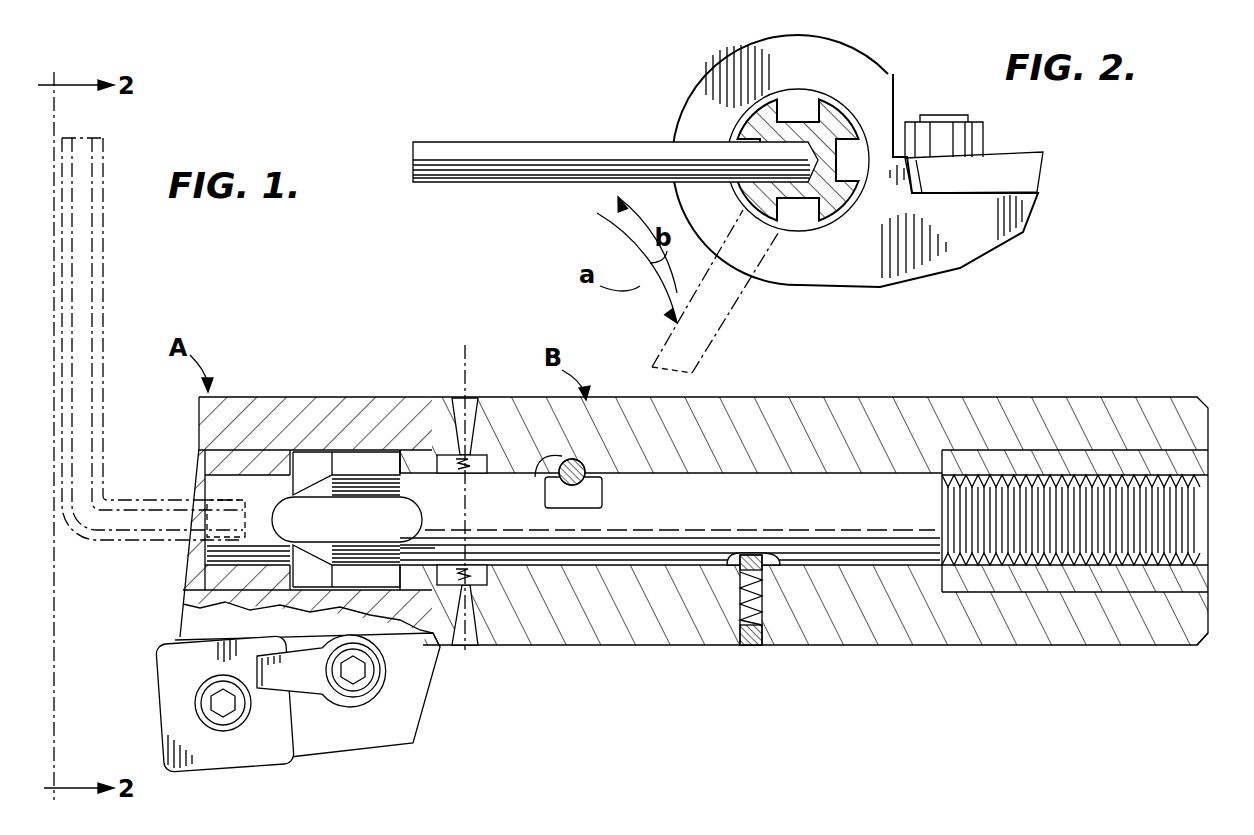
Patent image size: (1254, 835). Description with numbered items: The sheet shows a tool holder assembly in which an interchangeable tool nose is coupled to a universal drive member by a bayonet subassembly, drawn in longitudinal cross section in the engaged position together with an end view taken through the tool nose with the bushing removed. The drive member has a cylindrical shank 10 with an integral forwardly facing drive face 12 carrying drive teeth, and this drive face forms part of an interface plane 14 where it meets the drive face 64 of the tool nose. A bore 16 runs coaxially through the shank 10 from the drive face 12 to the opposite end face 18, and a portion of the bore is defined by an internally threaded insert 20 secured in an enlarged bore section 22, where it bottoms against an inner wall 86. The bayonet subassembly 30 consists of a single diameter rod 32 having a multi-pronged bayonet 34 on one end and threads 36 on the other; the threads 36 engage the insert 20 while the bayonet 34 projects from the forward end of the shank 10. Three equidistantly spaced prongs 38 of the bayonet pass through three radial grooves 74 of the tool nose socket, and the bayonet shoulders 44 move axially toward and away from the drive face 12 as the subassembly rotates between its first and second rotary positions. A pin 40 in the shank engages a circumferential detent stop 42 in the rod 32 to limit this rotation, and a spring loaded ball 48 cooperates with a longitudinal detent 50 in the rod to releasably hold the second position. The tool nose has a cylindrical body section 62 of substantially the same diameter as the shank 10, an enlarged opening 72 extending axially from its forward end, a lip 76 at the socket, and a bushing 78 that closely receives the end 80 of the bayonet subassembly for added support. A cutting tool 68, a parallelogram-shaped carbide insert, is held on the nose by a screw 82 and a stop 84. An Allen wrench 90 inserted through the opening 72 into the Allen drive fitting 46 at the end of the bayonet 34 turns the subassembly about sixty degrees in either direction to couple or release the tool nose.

In FIG. 1, the shank 10 is at (800, 412).
In FIG. 1, the drive face 12 is at (478, 397).
In FIG. 1, the interface plane 14 is at (455, 350).
In FIG. 1, the bore 16 is at (548, 556).
In FIG. 1, the end face 18 is at (1170, 636).
In FIG. 1, the internally threaded insert 20 is at (1195, 582).
In FIG. 1, the enlarged bore section 22 is at (972, 600).
In FIG. 1, the bayonet subassembly 30 is at (437, 505).
In FIG. 1, the rod 32 is at (702, 513).
In FIG. 1, the bayonet 34 is at (320, 531).
In FIG. 1, the threads 36 is at (965, 508).
In FIG. 1, the prongs 38 is at (360, 482).
In FIG. 2, the prongs 38 is at (742, 128).
In FIG. 1, the pin 40 is at (560, 468).
In FIG. 1, the detent stop 42 is at (602, 495).
In FIG. 1, the shoulders 44 is at (400, 460).
In FIG. 1, the Allen drive fitting 46 is at (210, 498).
In FIG. 1, the spring loaded ball 48 is at (775, 556).
In FIG. 1, the detent 50 is at (752, 556).
In FIG. 1, the body section 62 is at (296, 405).
In FIG. 2, the body section 62 is at (722, 68).
In FIG. 1, the drive face 64 is at (455, 397).
In FIG. 1, the cutting tool 68 is at (240, 745).
In FIG. 2, the cutting tool 68 is at (1000, 175).
In FIG. 1, the enlarged opening 72 is at (240, 452).
In FIG. 2, the enlarged opening 72 is at (828, 103).
In FIG. 2, the radial grooves 74 is at (795, 100).
In FIG. 1, the lip 76 is at (429, 543).
In FIG. 1, the bushing 78 is at (192, 456).
In FIG. 1, the end 80 is at (207, 545).
In FIG. 1, the screw 82 is at (217, 694).
In FIG. 1, the stop 84 is at (358, 692).
In FIG. 2, the stop 84 is at (945, 130).
In FIG. 1, the inner wall 86 is at (940, 543).
In FIG. 1, the Allen wrench 90 is at (103, 300).
In FIG. 2, the Allen wrench 90 is at (540, 145).